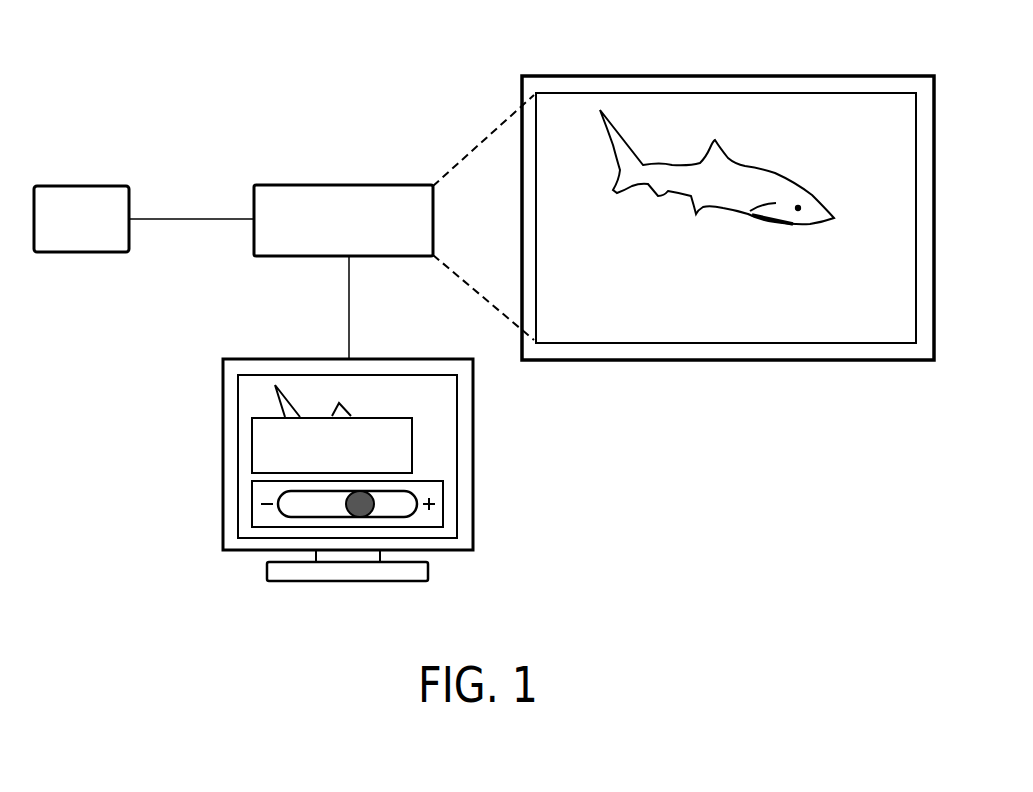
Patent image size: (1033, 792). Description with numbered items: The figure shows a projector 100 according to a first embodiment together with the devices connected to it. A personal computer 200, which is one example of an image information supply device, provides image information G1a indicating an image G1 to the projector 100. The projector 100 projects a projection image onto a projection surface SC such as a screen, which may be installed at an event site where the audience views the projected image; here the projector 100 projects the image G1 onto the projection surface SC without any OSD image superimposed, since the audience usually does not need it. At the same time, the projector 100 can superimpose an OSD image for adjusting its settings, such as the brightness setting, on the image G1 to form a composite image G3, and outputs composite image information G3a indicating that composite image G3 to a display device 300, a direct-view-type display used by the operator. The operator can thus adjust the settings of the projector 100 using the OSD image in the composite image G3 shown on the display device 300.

The projector 100 is at (372, 184).
The personal computer 200 is at (95, 184).
The display device 300 is at (395, 358).
The projection surface SC is at (790, 74).
The image G1 is at (767, 333).
The image information G1a is at (191, 206).
The composite image G3 is at (443, 445).
The composite image information G3a is at (377, 307).